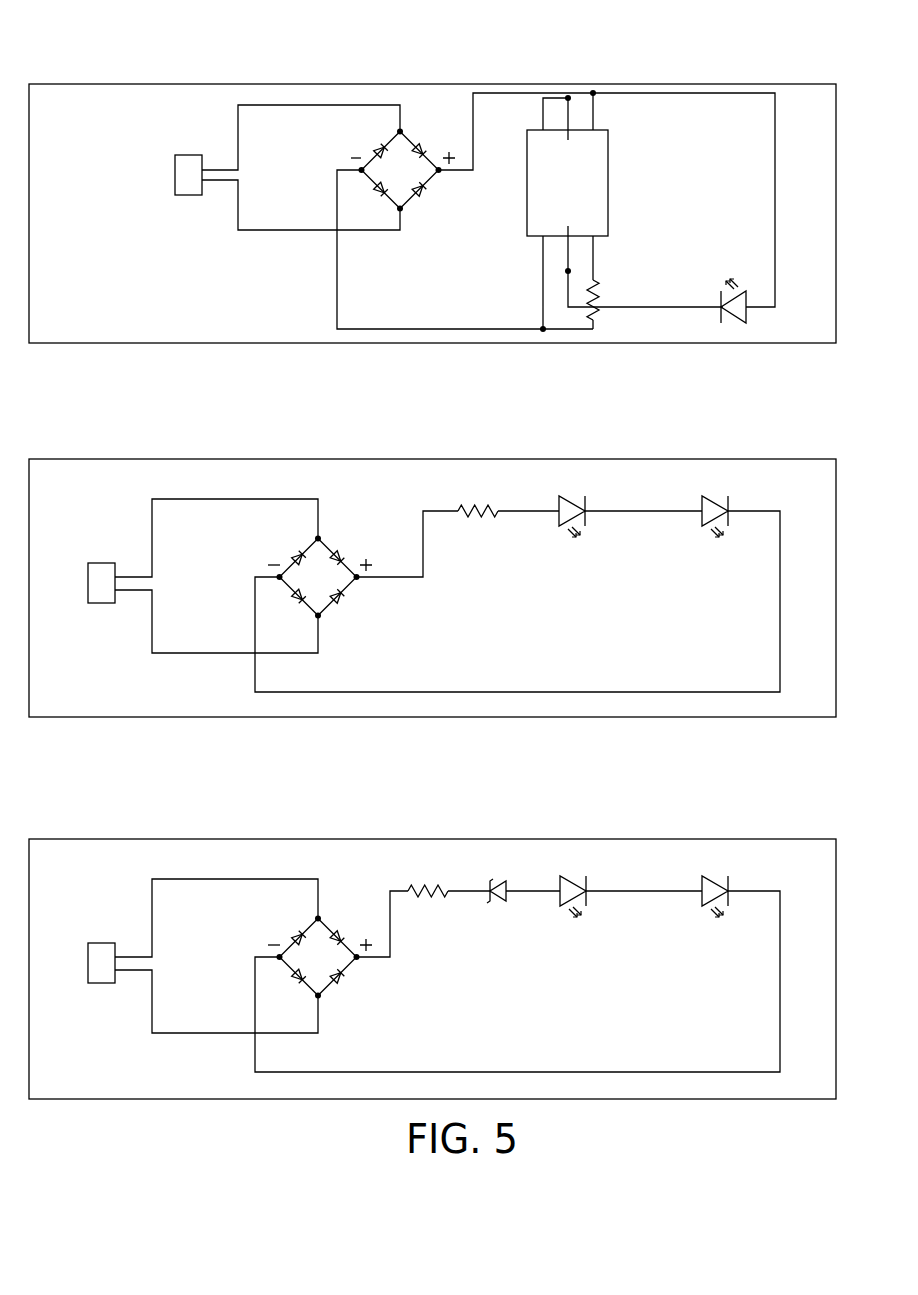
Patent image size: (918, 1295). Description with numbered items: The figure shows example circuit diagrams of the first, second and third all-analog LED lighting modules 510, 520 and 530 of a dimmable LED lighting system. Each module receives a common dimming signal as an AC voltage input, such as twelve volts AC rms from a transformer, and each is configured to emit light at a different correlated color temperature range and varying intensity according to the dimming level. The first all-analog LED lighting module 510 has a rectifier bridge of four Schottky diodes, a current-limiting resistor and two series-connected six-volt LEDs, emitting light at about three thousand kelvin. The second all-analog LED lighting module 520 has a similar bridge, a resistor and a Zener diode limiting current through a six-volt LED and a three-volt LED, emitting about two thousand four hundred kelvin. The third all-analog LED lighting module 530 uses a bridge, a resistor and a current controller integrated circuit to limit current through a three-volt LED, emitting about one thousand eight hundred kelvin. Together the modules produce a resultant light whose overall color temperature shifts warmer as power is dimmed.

The third all-analog LED lighting module 530 is at (432, 172).
The first all-analog LED lighting module 510 is at (432, 545).
The second all-analog LED lighting module 520 is at (432, 926).